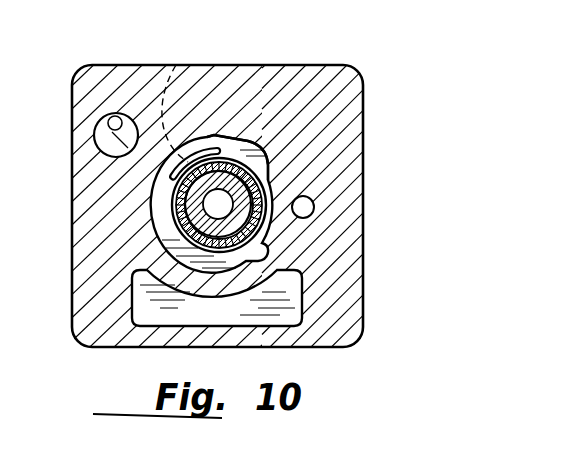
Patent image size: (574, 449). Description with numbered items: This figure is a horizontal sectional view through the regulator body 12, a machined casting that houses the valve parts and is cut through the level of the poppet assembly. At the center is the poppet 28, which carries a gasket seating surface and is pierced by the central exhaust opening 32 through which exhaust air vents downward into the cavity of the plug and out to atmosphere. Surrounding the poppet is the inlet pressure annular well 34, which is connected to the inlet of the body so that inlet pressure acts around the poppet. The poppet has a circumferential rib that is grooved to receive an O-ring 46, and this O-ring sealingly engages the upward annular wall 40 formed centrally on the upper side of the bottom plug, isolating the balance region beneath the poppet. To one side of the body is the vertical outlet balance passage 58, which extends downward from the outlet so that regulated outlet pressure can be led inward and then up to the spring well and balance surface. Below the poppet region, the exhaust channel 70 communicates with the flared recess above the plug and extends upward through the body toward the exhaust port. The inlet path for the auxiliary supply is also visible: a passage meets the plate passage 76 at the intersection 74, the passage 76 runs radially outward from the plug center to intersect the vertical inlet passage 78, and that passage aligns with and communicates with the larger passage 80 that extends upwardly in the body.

The body 12 is at (368, 249).
The poppet 28 is at (223, 207).
The central exhaust opening 32 is at (249, 233).
The inlet pressure annular well 34 is at (243, 146).
The upward annular wall 40 is at (165, 243).
The O-ring 46 is at (185, 210).
The vertical outlet balance passage 58 is at (313, 202).
The exhaust channel 70 is at (273, 307).
The intersection point 74 is at (203, 147).
The passage 76 is at (176, 63).
The vertical inlet passage 78 is at (117, 122).
The larger passage 80 is at (96, 148).